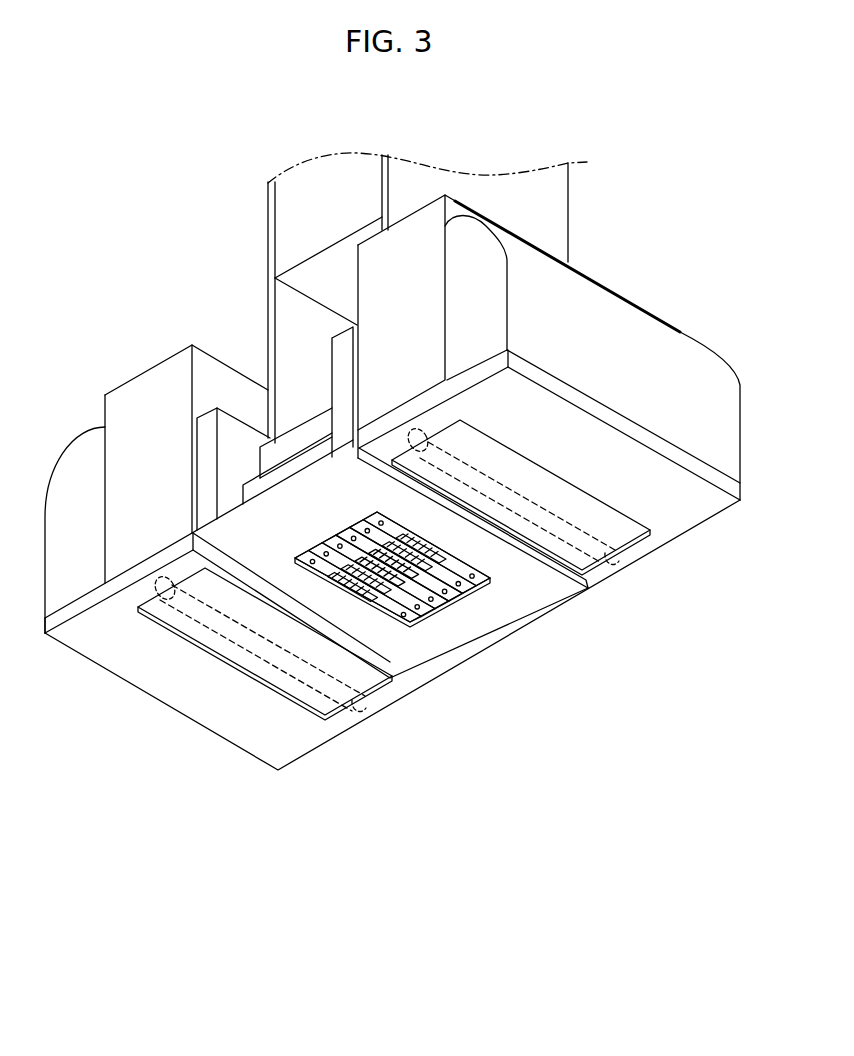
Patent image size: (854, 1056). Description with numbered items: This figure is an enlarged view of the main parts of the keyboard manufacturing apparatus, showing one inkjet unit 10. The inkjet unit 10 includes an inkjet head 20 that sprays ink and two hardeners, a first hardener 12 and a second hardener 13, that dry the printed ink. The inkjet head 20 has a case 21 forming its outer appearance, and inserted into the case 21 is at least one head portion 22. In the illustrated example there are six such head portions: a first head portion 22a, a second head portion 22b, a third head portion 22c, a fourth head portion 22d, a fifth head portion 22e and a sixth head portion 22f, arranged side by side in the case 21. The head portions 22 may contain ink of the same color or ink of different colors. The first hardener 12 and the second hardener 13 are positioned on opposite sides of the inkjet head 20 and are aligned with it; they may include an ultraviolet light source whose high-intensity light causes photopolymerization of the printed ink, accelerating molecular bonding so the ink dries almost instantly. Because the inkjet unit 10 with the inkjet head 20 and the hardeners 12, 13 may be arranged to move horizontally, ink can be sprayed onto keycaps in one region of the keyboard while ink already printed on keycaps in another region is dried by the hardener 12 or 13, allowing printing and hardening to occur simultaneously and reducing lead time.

The inkjet unit 10 is at (148, 237).
The first hardener 12 is at (258, 657).
The second hardener 13 is at (597, 533).
The inkjet head 20 is at (555, 611).
The case 21 is at (512, 612).
The head portion 22 is at (556, 770).
The first head portion 22a is at (490, 583).
The second head portion 22b is at (470, 592).
The third head portion 22c is at (453, 600).
The fourth head portion 22d is at (437, 607).
The fifth head portion 22e is at (423, 617).
The sixth head portion 22f is at (380, 600).